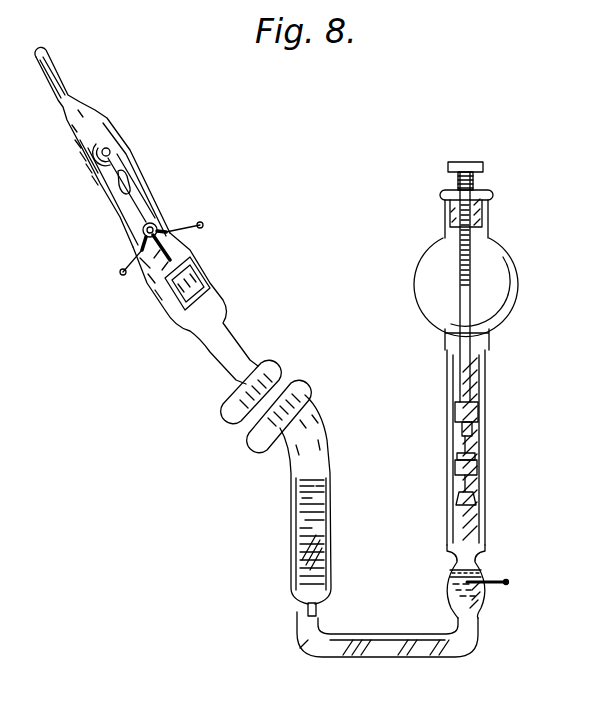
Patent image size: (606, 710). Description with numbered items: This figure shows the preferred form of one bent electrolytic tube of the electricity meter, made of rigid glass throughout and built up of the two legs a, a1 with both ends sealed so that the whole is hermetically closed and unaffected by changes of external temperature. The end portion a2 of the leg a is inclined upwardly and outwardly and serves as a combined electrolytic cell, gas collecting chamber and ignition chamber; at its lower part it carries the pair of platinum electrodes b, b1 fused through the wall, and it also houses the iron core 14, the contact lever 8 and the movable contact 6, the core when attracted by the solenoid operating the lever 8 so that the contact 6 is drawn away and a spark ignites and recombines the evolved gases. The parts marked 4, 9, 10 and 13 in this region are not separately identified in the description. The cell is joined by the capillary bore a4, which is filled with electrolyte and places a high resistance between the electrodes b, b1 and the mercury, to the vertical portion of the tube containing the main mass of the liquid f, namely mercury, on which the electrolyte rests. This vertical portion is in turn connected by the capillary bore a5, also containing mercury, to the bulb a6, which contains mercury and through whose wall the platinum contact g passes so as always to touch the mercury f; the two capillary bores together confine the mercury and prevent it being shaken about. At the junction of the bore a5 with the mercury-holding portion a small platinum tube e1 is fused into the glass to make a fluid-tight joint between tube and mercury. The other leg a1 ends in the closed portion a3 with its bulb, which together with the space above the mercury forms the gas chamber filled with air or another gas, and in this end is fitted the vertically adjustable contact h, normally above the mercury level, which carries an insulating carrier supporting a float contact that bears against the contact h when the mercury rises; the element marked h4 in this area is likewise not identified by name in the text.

The end portion of the tube a3 is at (100, 123).
The plunger head 4 is at (108, 155).
The contact 6 is at (97, 153).
The plunger rod 9 is at (127, 203).
The contact lever 8 is at (128, 190).
The pivot 13 is at (157, 226).
The electrode b1 is at (185, 229).
The electrode b is at (140, 253).
The valve stem 10 is at (163, 243).
The iron core 14 is at (197, 287).
The end portion of the tube a2 is at (183, 320).
The capillary bore a4 is at (272, 364).
The leg of the bent tube a is at (330, 515).
The liquid f is at (310, 548).
The small tube of platinum e1 is at (307, 613).
The capillary bore a5 is at (393, 637).
The leg of the bent tube a1 is at (457, 518).
The contact h is at (470, 435).
The valve stem h4 is at (473, 448).
The bulb a6 is at (457, 578).
The contact g is at (503, 573).